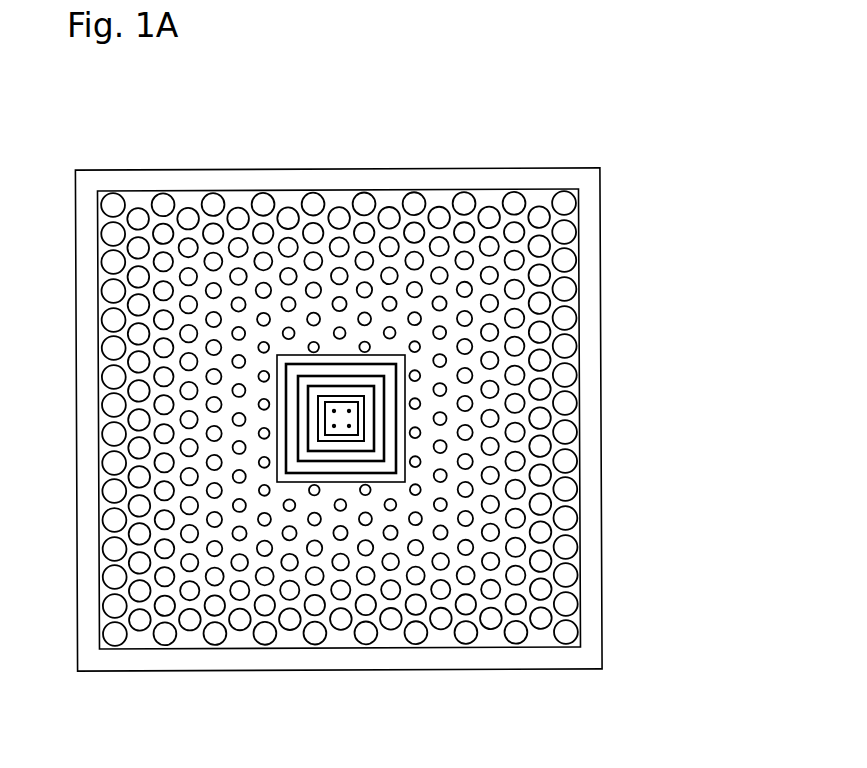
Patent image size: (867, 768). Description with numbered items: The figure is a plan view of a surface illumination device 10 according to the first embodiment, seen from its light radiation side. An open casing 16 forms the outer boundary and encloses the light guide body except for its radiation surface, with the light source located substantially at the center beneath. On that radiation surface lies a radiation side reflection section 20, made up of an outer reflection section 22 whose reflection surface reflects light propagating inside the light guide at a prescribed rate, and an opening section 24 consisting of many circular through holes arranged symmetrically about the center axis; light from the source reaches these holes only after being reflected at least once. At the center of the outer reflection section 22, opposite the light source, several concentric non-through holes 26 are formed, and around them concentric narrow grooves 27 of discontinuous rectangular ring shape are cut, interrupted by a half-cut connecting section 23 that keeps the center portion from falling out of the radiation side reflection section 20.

The surface illumination device 10 is at (622, 101).
The casing 16 is at (590, 586).
The radiation side reflection section 20 is at (725, 202).
The outer reflection section 22 is at (578, 498).
The opening section 24 is at (390, 332).
The narrow grooves 27 is at (384, 392).
The non-through holes 26 is at (350, 425).
The connecting section 23 is at (388, 460).